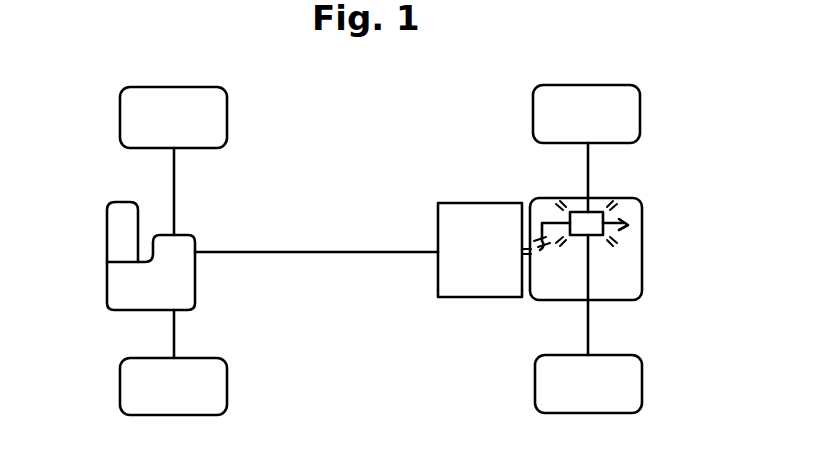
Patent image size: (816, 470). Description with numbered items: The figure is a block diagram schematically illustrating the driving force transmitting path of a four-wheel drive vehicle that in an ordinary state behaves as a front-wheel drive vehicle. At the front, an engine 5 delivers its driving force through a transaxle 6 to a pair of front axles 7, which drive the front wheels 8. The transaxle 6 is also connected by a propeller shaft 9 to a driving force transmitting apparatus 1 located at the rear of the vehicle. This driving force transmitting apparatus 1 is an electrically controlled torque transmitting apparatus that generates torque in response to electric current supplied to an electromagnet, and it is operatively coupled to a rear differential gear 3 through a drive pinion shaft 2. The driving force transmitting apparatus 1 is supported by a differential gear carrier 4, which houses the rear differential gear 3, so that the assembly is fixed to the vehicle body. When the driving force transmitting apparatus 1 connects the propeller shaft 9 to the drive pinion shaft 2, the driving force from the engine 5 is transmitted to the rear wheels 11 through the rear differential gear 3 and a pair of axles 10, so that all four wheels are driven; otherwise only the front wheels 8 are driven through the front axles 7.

The driving force transmitting apparatus 1 is at (489, 203).
The drive pinion shaft 2 is at (556, 249).
The rear differential gear 3 is at (596, 237).
The differential gear carrier 4 is at (548, 198).
The engine 5 is at (107, 238).
The transaxle 6 is at (107, 284).
The front axles 7 is at (174, 190).
The front wheels 8 is at (227, 118).
The propeller shaft 9 is at (318, 250).
The axles 10 is at (588, 166).
The rear wheels 11 is at (640, 112).